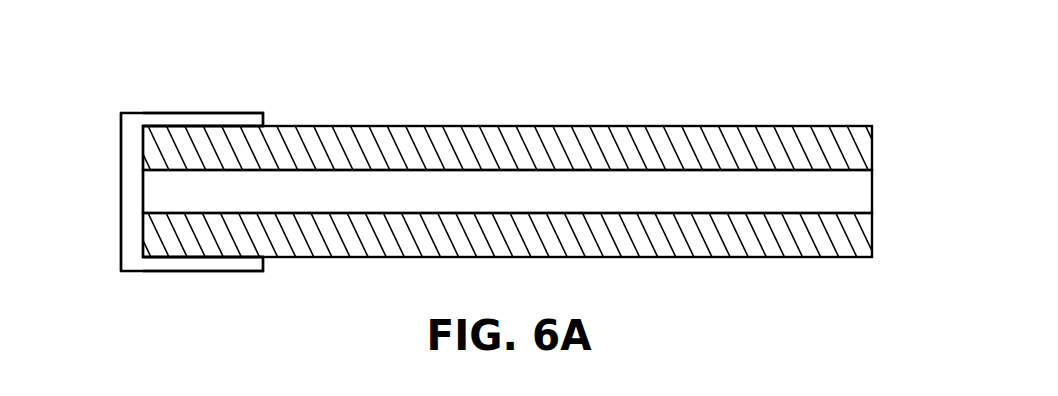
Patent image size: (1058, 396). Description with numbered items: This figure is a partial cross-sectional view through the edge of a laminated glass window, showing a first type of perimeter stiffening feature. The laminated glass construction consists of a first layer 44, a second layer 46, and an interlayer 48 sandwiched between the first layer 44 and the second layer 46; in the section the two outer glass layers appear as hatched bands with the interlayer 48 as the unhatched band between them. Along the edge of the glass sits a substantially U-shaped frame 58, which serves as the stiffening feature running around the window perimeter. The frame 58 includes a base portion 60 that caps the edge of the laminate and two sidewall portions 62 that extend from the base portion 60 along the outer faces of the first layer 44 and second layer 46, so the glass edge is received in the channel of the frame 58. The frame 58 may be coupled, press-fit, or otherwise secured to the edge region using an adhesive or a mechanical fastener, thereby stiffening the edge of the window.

The first layer 44 is at (887, 143).
The second layer 46 is at (887, 235).
The interlayer 48 is at (887, 193).
The frame 58 is at (90, 141).
The base portion 60 is at (120, 214).
The sidewall portions 62 is at (197, 113).